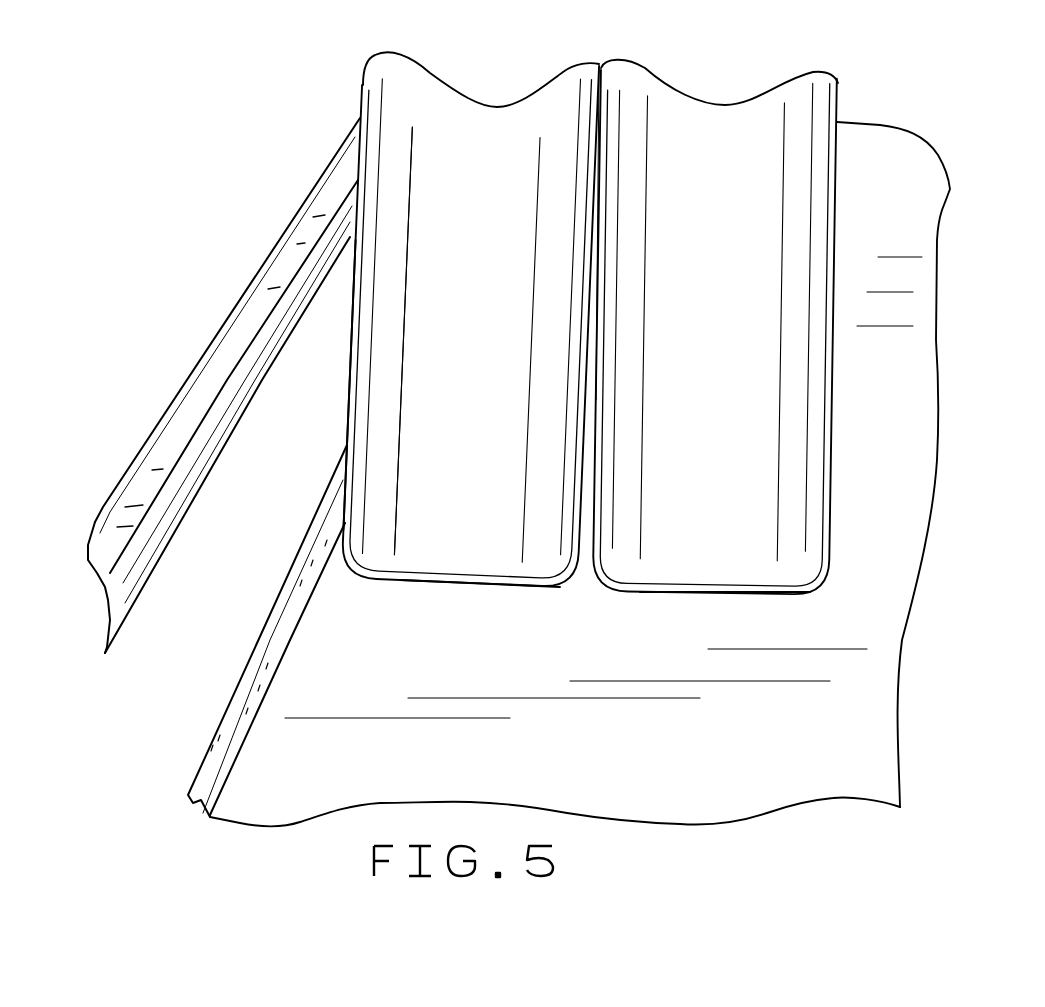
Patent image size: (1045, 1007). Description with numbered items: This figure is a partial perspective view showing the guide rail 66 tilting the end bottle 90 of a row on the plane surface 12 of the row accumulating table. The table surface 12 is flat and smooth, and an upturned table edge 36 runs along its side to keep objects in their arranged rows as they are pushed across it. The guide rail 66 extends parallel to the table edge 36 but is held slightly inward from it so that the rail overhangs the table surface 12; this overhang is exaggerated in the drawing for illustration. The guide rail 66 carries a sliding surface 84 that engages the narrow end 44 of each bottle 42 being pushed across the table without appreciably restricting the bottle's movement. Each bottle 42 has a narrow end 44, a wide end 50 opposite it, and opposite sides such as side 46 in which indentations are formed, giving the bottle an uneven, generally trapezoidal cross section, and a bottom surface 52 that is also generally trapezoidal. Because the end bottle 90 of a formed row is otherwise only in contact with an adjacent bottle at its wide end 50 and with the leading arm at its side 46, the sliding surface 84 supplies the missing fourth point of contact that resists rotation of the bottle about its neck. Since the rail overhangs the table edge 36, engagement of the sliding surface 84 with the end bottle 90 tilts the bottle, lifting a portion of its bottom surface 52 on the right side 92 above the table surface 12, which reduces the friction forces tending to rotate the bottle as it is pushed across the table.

The plane surface of the row accumulating table 12 is at (884, 576).
The bottle 42 is at (403, 138).
The narrow end of the bottle 44 is at (357, 172).
The side of the bottle 46 is at (448, 240).
The wide end of the bottle 50 is at (595, 188).
The bottom surface of the bottle 52 is at (462, 585).
The guide rail 66 is at (190, 377).
The sliding surface 84 is at (207, 478).
The end bottle 90 is at (347, 325).
The right side of the bottle 92 is at (354, 578).
The table edge 36 is at (288, 617).